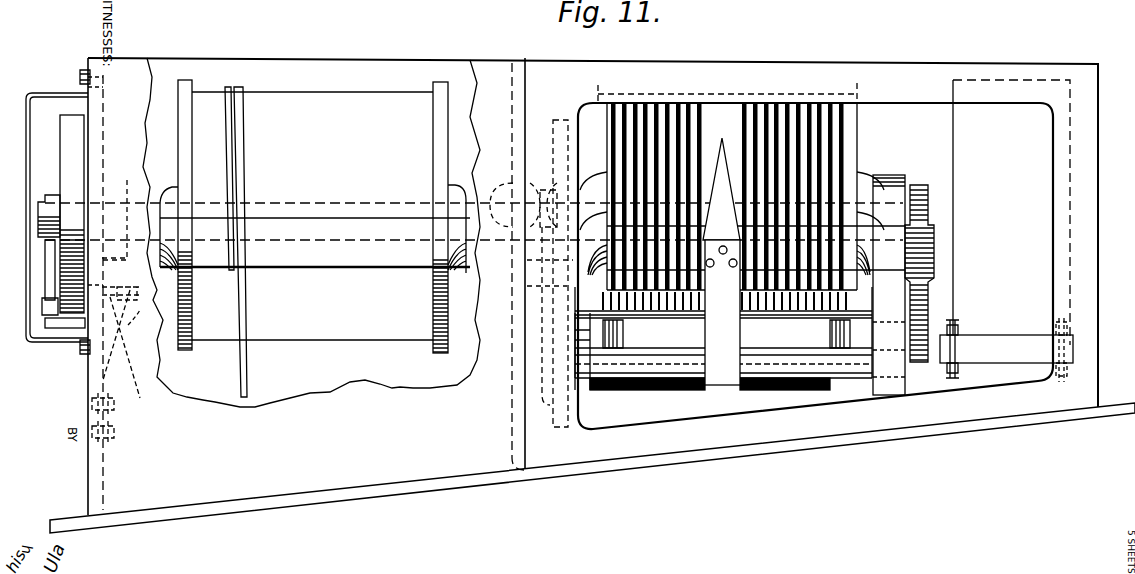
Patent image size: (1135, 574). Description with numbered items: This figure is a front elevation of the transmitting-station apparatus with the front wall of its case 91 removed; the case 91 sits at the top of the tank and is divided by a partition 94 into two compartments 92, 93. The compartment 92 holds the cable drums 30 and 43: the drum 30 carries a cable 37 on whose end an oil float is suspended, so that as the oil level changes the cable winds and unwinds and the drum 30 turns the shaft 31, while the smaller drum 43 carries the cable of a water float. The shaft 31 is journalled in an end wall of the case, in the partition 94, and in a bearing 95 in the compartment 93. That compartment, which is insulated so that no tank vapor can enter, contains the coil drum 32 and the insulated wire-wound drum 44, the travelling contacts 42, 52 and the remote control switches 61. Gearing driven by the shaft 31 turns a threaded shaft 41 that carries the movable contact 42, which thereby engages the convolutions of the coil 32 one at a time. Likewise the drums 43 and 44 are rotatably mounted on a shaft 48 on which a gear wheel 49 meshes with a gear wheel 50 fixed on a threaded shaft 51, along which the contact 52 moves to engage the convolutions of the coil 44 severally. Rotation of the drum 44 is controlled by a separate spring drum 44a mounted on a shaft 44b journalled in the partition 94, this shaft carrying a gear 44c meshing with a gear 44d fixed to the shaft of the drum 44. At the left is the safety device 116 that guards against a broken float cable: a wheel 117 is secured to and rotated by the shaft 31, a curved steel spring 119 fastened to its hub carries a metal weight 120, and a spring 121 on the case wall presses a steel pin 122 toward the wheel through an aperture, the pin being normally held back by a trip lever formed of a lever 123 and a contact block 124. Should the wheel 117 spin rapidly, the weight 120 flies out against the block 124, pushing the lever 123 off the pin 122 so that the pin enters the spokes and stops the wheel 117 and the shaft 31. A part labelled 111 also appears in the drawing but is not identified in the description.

The case 91 is at (250, 58).
The drum 30 is at (321, 86).
The shaft 31 is at (473, 200).
The coil drum 32 is at (851, 138).
The cable 37 is at (245, 379).
The threaded shaft 41 is at (598, 373).
The movable contact 42 is at (724, 240).
The drum 43 is at (420, 269).
The drum 44 is at (855, 250).
The separate drum 44a is at (767, 392).
The shaft 44b is at (624, 331).
The gear 44c is at (526, 427).
The gear 44d is at (542, 190).
The shaft 48 is at (178, 312).
The gear wheel 49 is at (930, 193).
The gear wheel 50 is at (915, 362).
The threaded shaft 51 is at (575, 318).
The contact 52 is at (728, 262).
The remote control switches 61 is at (957, 121).
The compartment 92 is at (400, 384).
The compartment 93 is at (686, 414).
The partition 94 is at (516, 393).
The bearing 95 is at (889, 174).
The roller 111 is at (775, 389).
The safety device 116 is at (47, 195).
The wheel 117 is at (80, 133).
The curved steel spring 119 is at (27, 312).
The metal weight 120 is at (57, 318).
The spring 121 is at (133, 386).
The steel pin 122 is at (128, 326).
The lever 123 is at (95, 258).
The contact block 124 is at (73, 331).